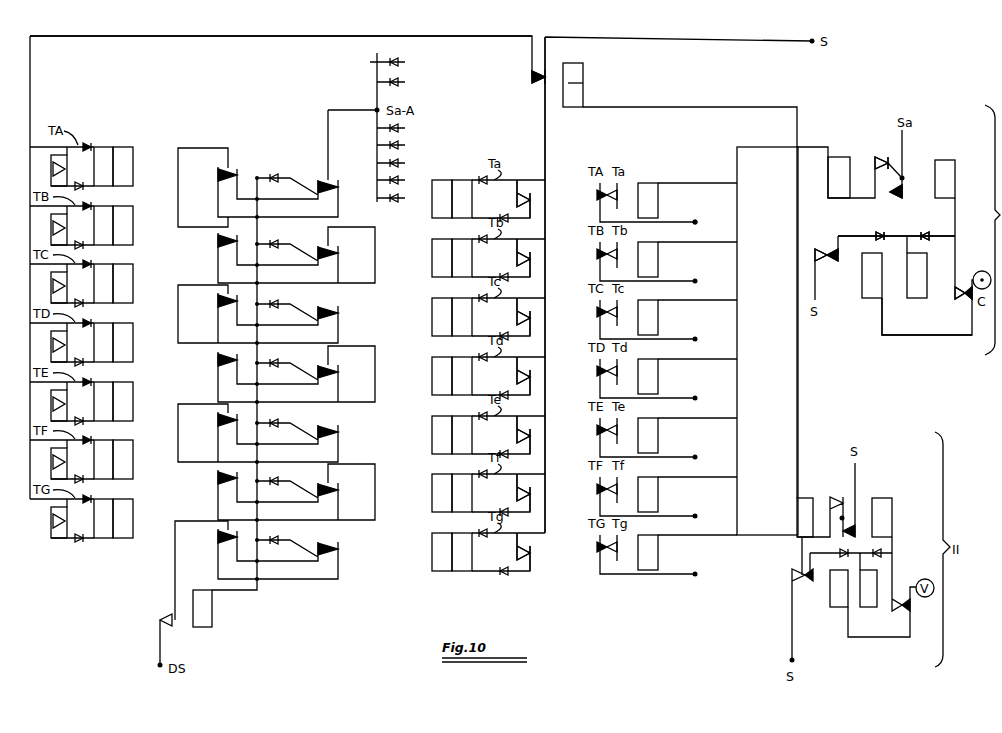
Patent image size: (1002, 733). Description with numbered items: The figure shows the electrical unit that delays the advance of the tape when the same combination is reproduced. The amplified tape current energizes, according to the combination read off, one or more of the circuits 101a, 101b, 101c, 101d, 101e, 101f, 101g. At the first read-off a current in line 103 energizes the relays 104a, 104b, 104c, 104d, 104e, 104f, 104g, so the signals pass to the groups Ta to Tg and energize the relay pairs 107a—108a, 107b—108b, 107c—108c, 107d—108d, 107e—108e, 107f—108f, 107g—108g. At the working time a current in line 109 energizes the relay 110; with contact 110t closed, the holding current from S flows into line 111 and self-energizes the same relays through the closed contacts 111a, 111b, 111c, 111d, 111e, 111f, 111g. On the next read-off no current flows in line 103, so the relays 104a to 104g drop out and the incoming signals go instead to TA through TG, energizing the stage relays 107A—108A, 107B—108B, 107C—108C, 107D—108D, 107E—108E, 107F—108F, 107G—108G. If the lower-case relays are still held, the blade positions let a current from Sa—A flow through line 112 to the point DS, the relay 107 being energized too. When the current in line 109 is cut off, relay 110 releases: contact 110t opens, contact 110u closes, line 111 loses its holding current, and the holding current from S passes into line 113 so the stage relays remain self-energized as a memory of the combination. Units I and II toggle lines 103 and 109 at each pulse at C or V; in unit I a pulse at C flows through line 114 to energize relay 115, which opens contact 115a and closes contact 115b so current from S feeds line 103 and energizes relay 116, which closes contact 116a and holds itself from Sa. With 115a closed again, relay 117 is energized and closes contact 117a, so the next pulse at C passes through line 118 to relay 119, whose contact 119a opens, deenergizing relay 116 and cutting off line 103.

The circuit 101a is at (712, 222).
The circuit 101b is at (712, 281).
The circuit 101c is at (712, 339).
The circuit 101d is at (712, 398).
The circuit 101e is at (712, 457).
The circuit 101f is at (711, 516).
The circuit 101g is at (712, 574).
The line 103 is at (740, 213).
The relay 104a is at (658, 197).
The relay 104b is at (658, 256).
The relay 104c is at (658, 314).
The relay 104d is at (658, 373).
The relay 104e is at (658, 432).
The relay 104f is at (658, 491).
The relay 104g is at (658, 549).
The relay 107 is at (200, 614).
The relay 107A is at (104, 154).
The relay 107B is at (98, 220).
The relay 107C is at (98, 278).
The relay 107D is at (98, 337).
The relay 107E is at (98, 396).
The relay 107F is at (98, 454).
The relay 107G is at (98, 513).
The relay 108A is at (126, 154).
The relay 108B is at (125, 225).
The relay 108C is at (125, 283).
The relay 108D is at (125, 342).
The relay 108E is at (125, 401).
The relay 108F is at (125, 453).
The relay 108G is at (125, 515).
The relay 107a is at (438, 187).
The relay 107b is at (438, 246).
The relay 107c is at (438, 305).
The relay 107d is at (438, 364).
The relay 107e is at (438, 423).
The relay 107f is at (438, 481).
The relay 107g is at (438, 540).
The relay 108a is at (462, 198).
The relay 108b is at (462, 257).
The relay 108c is at (462, 316).
The relay 108d is at (462, 375).
The relay 108e is at (462, 434).
The relay 108f is at (462, 492).
The relay 108g is at (462, 551).
The line 109 is at (768, 107).
The relay 110 is at (583, 83).
The contact 110u is at (531, 78).
The contact 110t is at (543, 85).
The line 111 is at (545, 138).
The contact 111a is at (520, 188).
The contact 111b is at (520, 247).
The contact 111c is at (520, 306).
The contact 111d is at (520, 365).
The contact 111e is at (520, 424).
The contact 111f is at (520, 482).
The contact 111g is at (520, 541).
The line 112 is at (327, 140).
The line 113 is at (287, 37).
The line 114 is at (940, 336).
The relay 115 is at (868, 298).
The contact 115a is at (835, 261).
The contact 115b is at (820, 252).
The relay 116 is at (840, 151).
The contact 116a is at (876, 154).
The relay 117 is at (918, 298).
The contact 117a is at (955, 299).
The line 118 is at (952, 236).
The relay 119 is at (945, 165).
The contact 119a is at (898, 200).